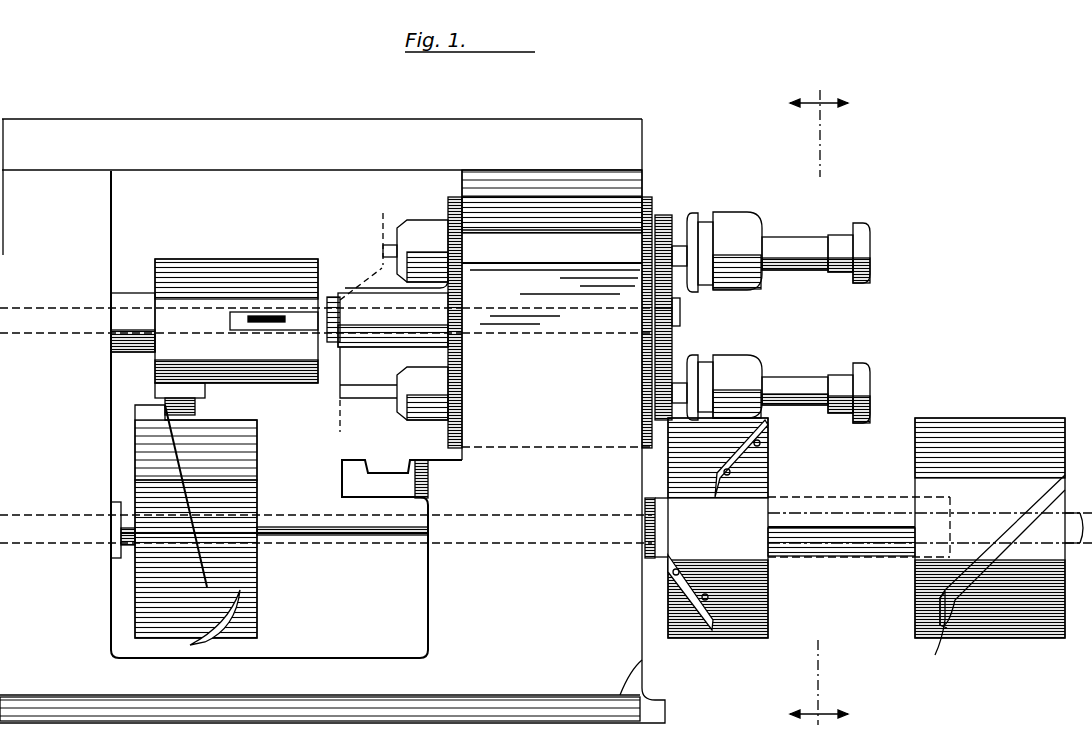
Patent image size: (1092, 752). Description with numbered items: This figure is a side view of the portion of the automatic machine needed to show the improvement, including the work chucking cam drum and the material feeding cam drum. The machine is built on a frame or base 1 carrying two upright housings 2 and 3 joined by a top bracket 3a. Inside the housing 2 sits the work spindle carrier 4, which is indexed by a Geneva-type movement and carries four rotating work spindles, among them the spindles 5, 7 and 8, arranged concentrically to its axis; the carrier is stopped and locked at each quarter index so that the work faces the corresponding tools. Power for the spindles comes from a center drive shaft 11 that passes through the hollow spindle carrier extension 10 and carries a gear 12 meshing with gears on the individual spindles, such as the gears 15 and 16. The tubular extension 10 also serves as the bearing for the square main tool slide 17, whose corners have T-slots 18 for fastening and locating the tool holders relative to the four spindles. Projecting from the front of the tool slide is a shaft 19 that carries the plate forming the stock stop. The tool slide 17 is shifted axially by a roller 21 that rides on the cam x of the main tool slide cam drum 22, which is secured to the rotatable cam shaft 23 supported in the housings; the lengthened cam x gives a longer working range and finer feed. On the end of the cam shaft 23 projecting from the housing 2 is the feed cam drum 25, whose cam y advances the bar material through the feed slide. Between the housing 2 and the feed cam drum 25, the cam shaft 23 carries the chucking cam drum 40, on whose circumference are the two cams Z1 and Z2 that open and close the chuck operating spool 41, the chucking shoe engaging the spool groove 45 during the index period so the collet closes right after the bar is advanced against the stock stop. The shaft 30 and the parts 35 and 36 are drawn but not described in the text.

The frame or base 1 is at (630, 675).
The upright housing 2 is at (625, 178).
The upright housing 3 is at (90, 183).
The top bracket 3a is at (270, 138).
The work spindle carrier 4 is at (448, 197).
The work spindle 5 is at (819, 409).
The work spindle 7 is at (385, 225).
The work spindle 8 is at (375, 398).
The hollow spindle carrier extension 10 is at (385, 345).
The center drive shaft 11 is at (530, 318).
The gear 12 is at (680, 306).
The gear 15 is at (665, 222).
The gear 16 is at (672, 358).
The main tool slide 17 is at (330, 297).
The T-slots 18 is at (270, 258).
The shaft 19 is at (248, 316).
The roller 21 is at (197, 408).
The main tool slide cam drum 22 is at (252, 612).
The cam shaft 23 is at (385, 535).
The cam drum 25 is at (985, 420).
The shaft 30 is at (862, 497).
The knob 35 is at (862, 228).
The shaft 36 is at (813, 237).
The cam drum 40 is at (770, 625).
The chuck operating spool 41 is at (750, 215).
The chuck operating spool groove 45 is at (705, 222).
The cam Z1 is at (770, 465).
The cam Z2 is at (770, 592).
The cam x is at (190, 480).
The cam y is at (940, 620).